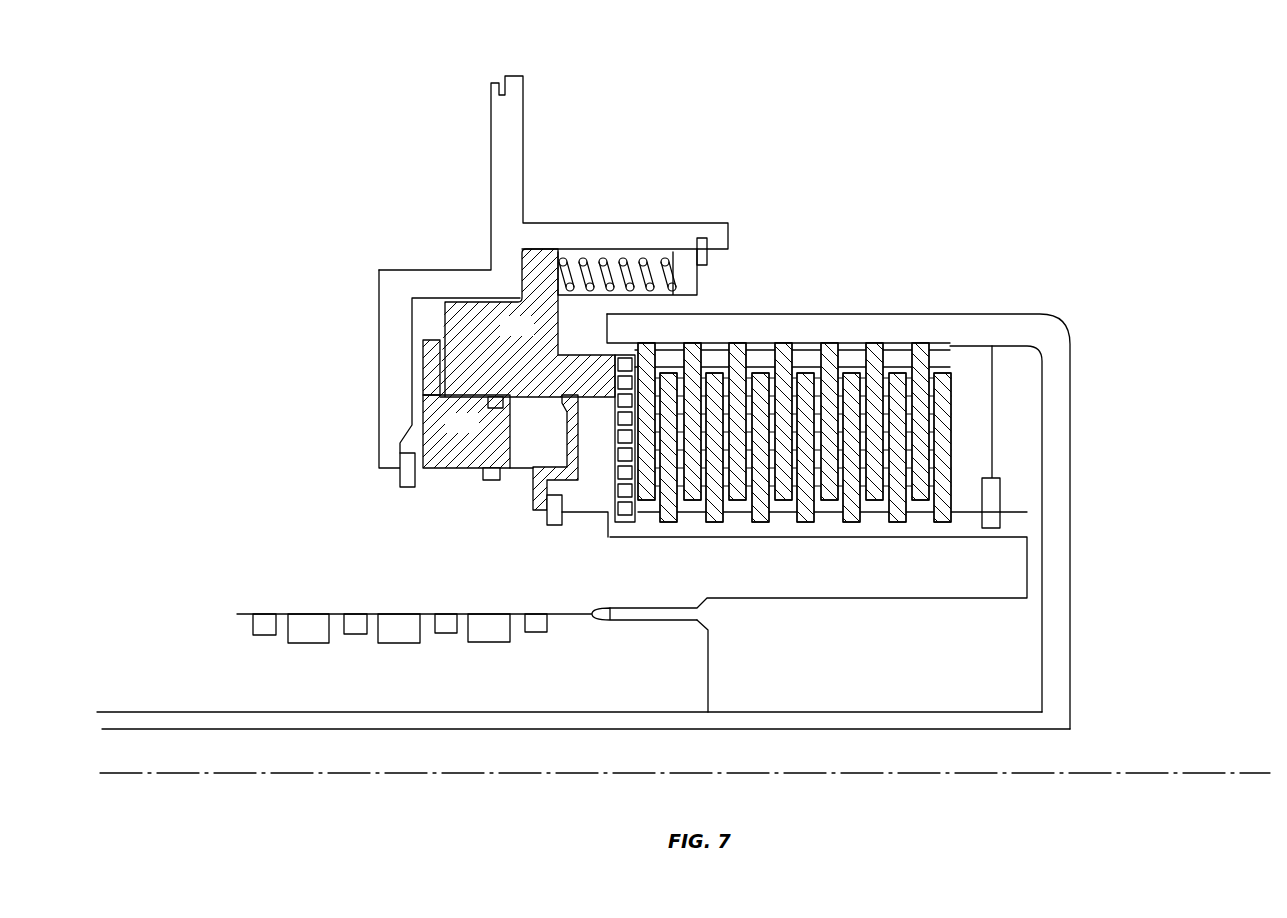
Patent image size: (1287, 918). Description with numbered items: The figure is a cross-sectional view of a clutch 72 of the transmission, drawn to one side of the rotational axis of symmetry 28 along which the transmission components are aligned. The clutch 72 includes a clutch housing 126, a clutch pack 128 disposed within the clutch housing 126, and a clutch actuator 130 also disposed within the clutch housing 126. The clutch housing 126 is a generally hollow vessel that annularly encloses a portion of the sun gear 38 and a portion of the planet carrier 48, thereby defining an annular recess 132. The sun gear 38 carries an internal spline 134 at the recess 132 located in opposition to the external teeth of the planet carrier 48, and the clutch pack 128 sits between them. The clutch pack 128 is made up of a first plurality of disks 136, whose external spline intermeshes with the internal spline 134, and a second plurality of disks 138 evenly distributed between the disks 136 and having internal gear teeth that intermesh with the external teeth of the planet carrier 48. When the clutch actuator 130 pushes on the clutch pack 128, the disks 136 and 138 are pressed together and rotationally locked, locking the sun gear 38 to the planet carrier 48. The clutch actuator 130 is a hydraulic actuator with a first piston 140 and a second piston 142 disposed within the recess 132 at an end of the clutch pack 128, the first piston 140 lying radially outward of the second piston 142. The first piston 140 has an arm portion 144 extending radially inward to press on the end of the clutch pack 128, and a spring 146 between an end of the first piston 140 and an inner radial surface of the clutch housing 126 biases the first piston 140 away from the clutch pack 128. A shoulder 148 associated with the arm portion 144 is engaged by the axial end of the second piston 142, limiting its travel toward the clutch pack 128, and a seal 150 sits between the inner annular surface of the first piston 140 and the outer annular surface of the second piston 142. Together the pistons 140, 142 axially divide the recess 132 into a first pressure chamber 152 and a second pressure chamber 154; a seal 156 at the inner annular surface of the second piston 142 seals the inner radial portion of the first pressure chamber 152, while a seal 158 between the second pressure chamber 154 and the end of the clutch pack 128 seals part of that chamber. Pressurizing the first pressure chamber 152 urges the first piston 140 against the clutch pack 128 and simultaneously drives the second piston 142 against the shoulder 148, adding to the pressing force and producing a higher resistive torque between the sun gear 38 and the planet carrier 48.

The clutch 72 is at (881, 130).
The rotational axis of symmetry 28 is at (480, 776).
The clutch housing 126 is at (507, 122).
The annular recess 132 is at (594, 300).
The spring 146 is at (588, 313).
The first piston 140 is at (527, 323).
The seal 150 is at (498, 398).
The shoulder 148 is at (440, 357).
The second piston 142 is at (466, 431).
The first pressure chamber 152 is at (423, 317).
The clutch actuator 130 is at (424, 508).
The seal 156 is at (492, 481).
The second pressure chamber 154 is at (530, 458).
The seal 158 is at (578, 483).
The arm portion 144 is at (591, 398).
The sun gear 38 is at (778, 340).
The second plurality of disks 138 is at (697, 500).
The first plurality of disks 136 is at (642, 345).
The clutch pack 128 is at (944, 328).
The internal spline 134 is at (951, 357).
The planet carrier 48 is at (632, 624).